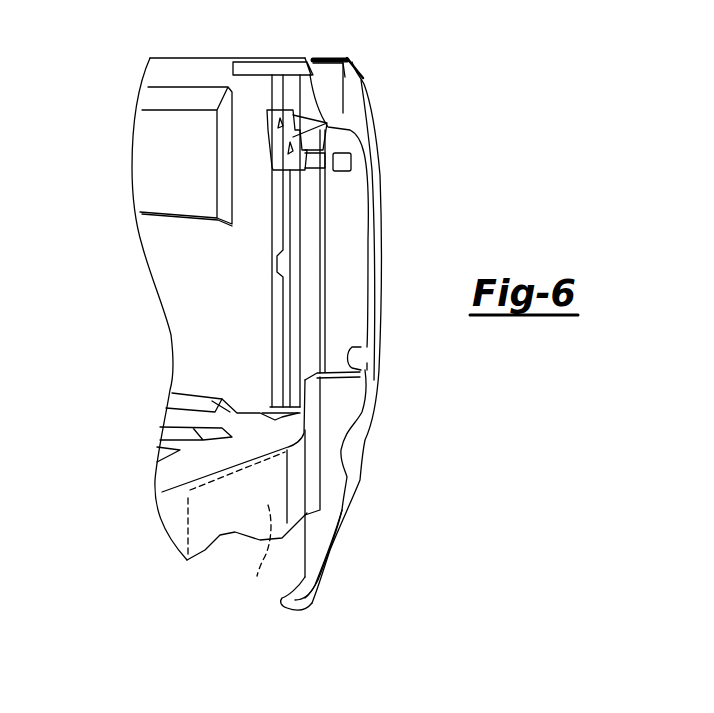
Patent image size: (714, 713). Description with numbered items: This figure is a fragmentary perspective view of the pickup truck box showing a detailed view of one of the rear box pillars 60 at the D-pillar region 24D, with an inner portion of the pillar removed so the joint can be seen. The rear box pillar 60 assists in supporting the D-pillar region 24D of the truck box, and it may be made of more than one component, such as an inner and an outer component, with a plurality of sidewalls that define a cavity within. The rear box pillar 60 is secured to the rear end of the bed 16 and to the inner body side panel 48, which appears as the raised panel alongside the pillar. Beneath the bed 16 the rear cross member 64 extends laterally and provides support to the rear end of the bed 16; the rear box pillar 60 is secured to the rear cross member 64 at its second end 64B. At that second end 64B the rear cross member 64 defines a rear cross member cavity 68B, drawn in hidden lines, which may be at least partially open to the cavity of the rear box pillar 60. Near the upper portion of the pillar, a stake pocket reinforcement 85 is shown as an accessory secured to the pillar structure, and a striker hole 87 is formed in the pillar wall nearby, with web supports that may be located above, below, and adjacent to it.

The D-pillar region 24D is at (343, 56).
The second inner body side panel 48 is at (148, 152).
The stake pocket reinforcement 85 is at (327, 127).
The striker hole 87 is at (353, 166).
The rear box pillar 60 is at (307, 207).
The bed 16 is at (182, 417).
The rear cross member 64 is at (207, 552).
The second end 64B is at (287, 538).
The rear cross member cavity 68B is at (260, 555).